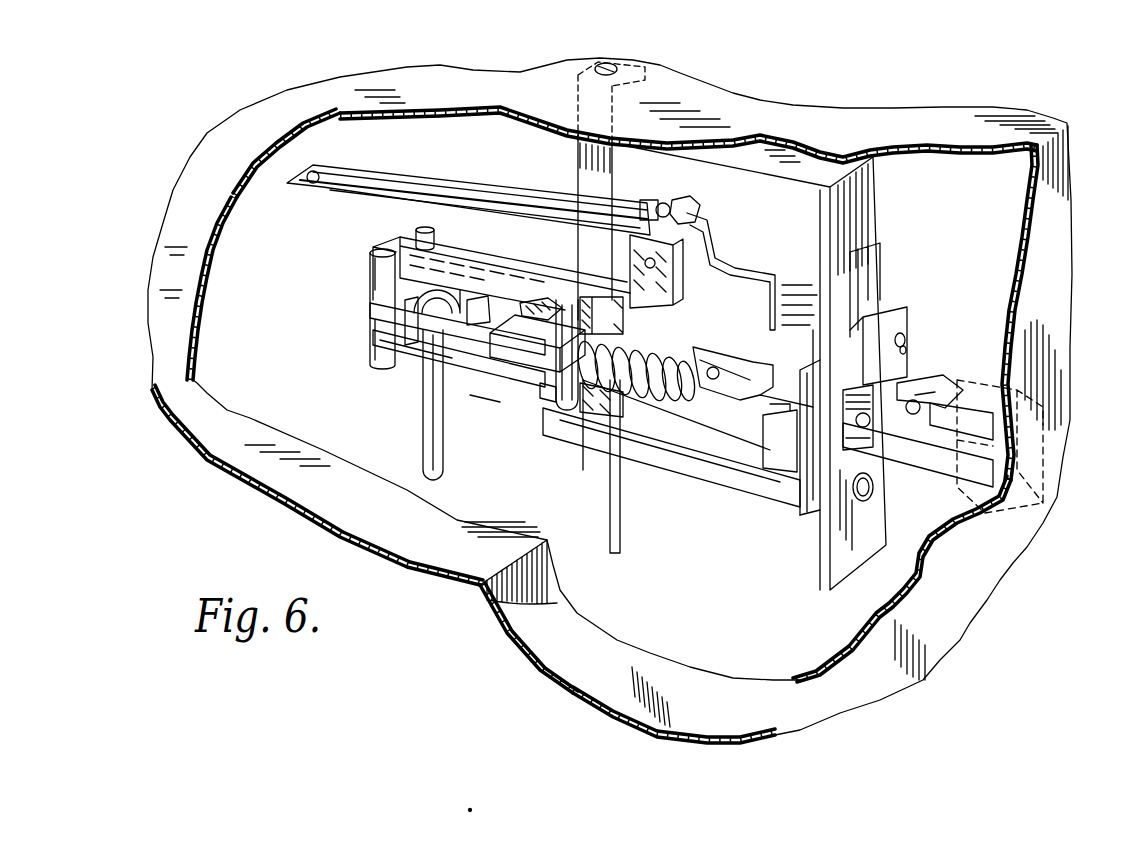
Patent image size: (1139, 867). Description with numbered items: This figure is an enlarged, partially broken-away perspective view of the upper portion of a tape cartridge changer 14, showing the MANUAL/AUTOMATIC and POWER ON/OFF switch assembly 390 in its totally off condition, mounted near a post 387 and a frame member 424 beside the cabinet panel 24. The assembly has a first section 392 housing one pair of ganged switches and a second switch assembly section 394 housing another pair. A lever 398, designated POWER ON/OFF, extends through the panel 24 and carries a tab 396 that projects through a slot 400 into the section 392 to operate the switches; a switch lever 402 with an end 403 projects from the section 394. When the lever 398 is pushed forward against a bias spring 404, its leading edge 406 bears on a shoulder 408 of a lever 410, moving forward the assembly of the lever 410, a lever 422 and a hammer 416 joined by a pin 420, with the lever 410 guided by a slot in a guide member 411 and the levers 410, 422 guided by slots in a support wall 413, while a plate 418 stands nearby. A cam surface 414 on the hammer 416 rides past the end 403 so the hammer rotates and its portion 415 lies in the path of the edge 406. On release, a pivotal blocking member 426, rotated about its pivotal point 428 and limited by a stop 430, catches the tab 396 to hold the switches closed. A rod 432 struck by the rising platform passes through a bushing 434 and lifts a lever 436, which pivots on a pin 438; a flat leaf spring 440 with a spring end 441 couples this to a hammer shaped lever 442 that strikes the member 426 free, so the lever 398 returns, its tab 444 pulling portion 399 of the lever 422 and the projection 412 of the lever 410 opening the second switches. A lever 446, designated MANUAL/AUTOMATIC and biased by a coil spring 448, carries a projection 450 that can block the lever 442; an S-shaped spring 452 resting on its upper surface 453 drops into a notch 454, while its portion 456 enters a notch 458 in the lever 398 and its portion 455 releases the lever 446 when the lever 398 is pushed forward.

The door 14 is at (724, 100).
The changer cabinet assembly panel 24 is at (947, 613).
The post 387 is at (620, 537).
The switch assembly 390 is at (368, 377).
The first section 392 is at (800, 293).
The second switch assembly section 394 is at (455, 250).
The tab 396 is at (737, 427).
The lever 398 is at (940, 463).
The portion 399 is at (780, 455).
The slot 400 is at (720, 383).
The switch lever 402 is at (523, 343).
The end 403 is at (490, 325).
The bias spring 404 is at (655, 425).
The leading edge 406 is at (667, 377).
The shoulder 408 is at (601, 313).
The lever 410 is at (640, 328).
The guide member 411 is at (397, 308).
The lever projection 412 is at (482, 295).
The support wall 413 is at (607, 443).
The cam surface 414 is at (480, 412).
The portion 415 is at (553, 403).
The hammer 416 is at (543, 380).
The plate 418 is at (427, 323).
The pin 420 is at (370, 262).
The lever 422 is at (600, 450).
The frame block 424 is at (370, 255).
The pivotal blocking member 426 is at (688, 308).
The pivotal point 428 is at (720, 372).
The stop 430 is at (740, 395).
The rod 432 is at (427, 423).
The bushing 434 is at (413, 237).
The lever 436 is at (335, 197).
The pin 438 is at (645, 262).
The flat leaf spring 440 is at (503, 194).
The spring end 441 is at (666, 203).
The hammer shaped lever 442 is at (687, 213).
The tab 444 is at (772, 425).
The lever 446 is at (960, 410).
The coil spring 448 is at (923, 397).
The projection 450 is at (785, 297).
The S-shaped spring 452 is at (877, 497).
The upper surface 453 is at (890, 367).
The notch 454 is at (910, 377).
The portion 455 is at (850, 333).
The portion 456 is at (815, 475).
The notch 458 is at (910, 430).